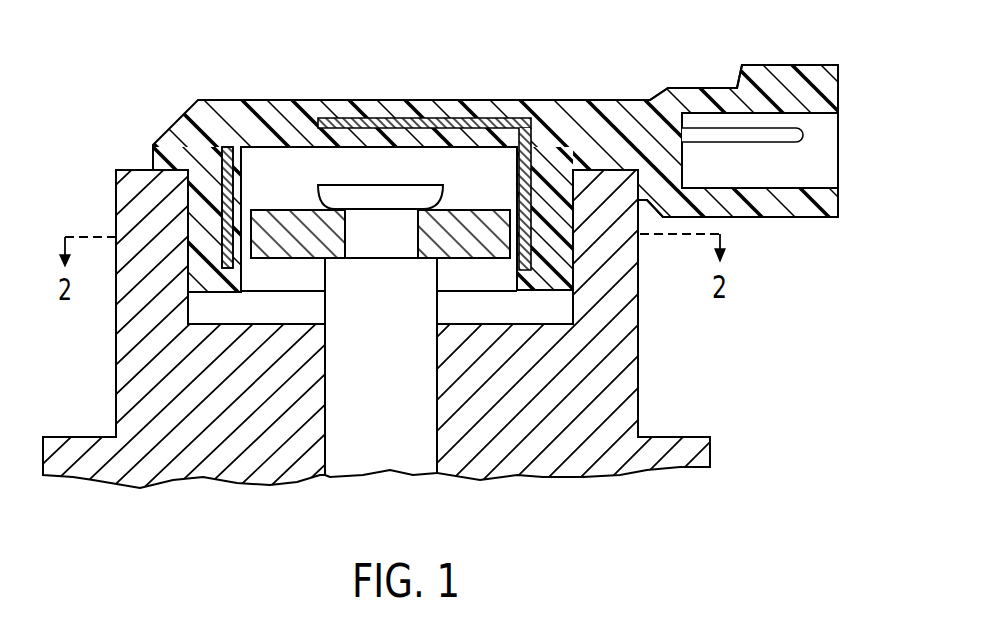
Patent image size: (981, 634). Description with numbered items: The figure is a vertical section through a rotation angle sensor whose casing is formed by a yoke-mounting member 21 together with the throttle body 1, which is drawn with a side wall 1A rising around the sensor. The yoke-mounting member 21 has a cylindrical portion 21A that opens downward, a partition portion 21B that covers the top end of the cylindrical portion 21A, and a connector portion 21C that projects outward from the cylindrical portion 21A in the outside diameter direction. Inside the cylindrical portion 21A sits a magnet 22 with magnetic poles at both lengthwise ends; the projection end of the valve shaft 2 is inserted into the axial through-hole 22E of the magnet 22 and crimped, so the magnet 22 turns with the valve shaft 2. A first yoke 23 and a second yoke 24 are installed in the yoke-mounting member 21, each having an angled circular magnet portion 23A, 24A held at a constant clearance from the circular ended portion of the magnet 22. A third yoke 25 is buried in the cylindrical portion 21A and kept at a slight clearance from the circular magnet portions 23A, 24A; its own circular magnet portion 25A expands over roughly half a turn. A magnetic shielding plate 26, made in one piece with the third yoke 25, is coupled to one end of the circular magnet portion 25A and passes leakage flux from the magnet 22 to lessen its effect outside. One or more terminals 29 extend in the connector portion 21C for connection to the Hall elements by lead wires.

The throttle body 1 is at (490, 317).
The side wall of base housing 1A is at (630, 337).
The valve shaft 2 is at (370, 463).
The yoke-mounting member 21 is at (490, 317).
The cylindrical portion 21A is at (212, 277).
The partition portion 21B is at (303, 110).
The connector portion 21C is at (757, 113).
The magnet 22 is at (380, 204).
The through-hole 22E is at (407, 211).
The first yoke 23 is at (248, 159).
The second yoke 24 is at (224, 147).
The circular magnet portion 23A is at (140, 196).
The circular magnet portion 24A is at (222, 166).
The third yoke 25 is at (533, 158).
The circular magnet portion 25A is at (542, 210).
The magnetic shielding plate 26 is at (458, 118).
The terminal 29 is at (796, 136).